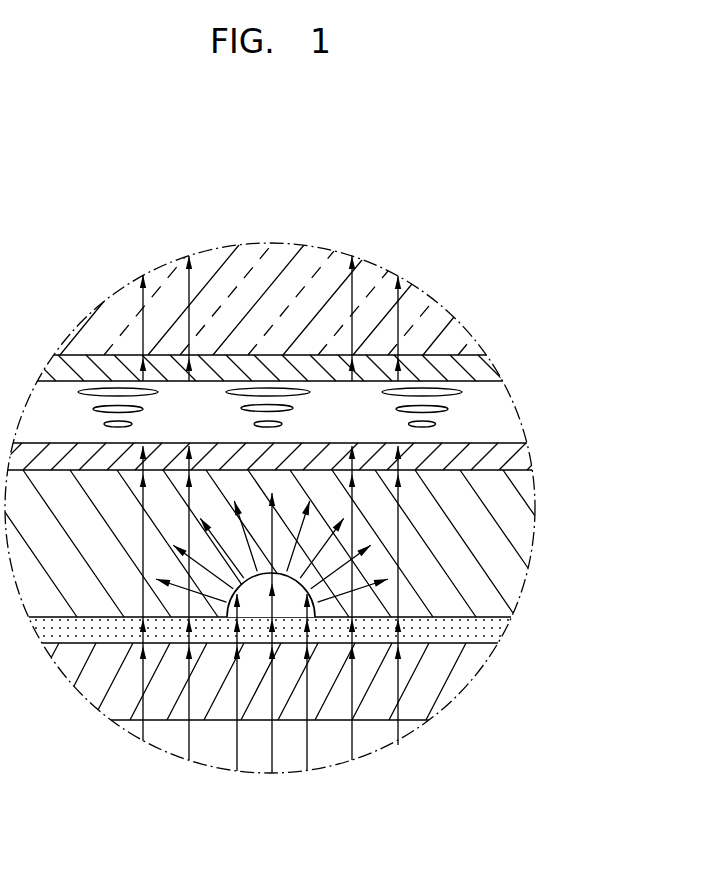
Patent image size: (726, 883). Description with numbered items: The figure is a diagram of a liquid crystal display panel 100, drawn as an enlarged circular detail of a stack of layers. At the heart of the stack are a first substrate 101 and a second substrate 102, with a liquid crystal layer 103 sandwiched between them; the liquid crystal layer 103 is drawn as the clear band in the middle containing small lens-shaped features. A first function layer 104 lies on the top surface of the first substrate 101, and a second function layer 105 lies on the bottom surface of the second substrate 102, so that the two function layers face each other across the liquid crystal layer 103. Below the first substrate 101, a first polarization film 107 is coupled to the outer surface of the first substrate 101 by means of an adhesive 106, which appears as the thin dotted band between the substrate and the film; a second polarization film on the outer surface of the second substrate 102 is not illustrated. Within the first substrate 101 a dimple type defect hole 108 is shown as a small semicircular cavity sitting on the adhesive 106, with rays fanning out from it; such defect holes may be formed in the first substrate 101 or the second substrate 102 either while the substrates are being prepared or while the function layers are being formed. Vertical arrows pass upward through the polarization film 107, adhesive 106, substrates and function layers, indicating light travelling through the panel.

The liquid crystal display panel 100 is at (137, 245).
The first substrate 101 is at (523, 550).
The second substrate 102 is at (445, 318).
The liquid crystal layer 103 is at (505, 415).
The first function layer 104 is at (522, 457).
The second function layer 105 is at (485, 367).
The adhesive 106 is at (493, 627).
The first polarization film 107 is at (452, 677).
The dimple type defect hole 108 is at (283, 598).